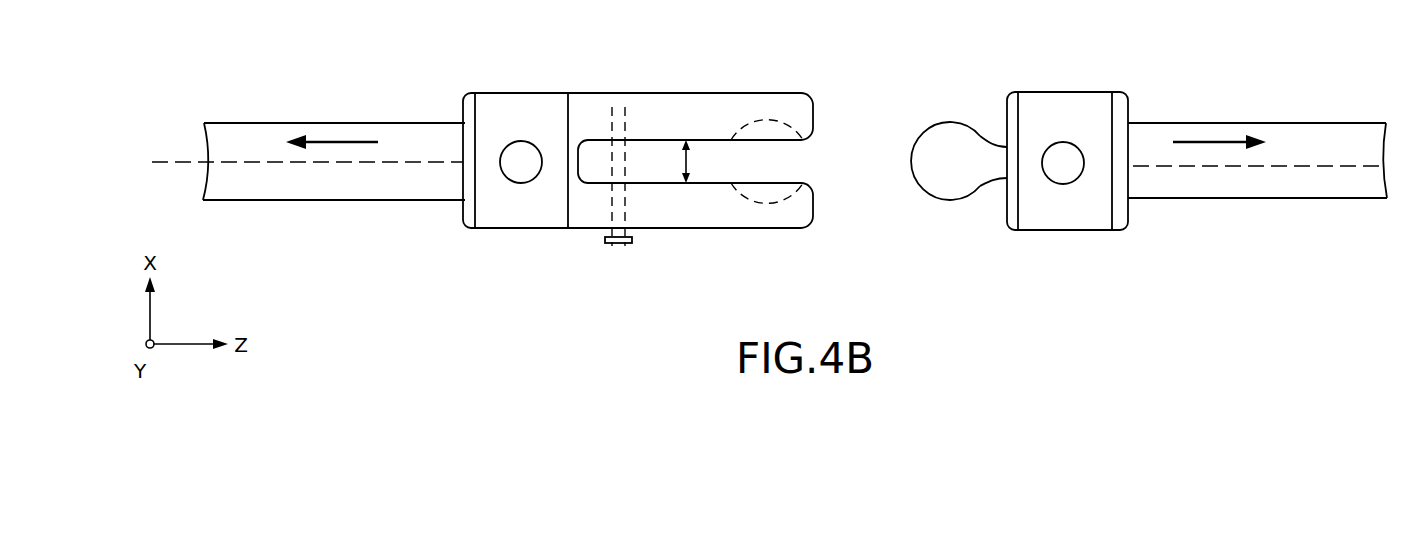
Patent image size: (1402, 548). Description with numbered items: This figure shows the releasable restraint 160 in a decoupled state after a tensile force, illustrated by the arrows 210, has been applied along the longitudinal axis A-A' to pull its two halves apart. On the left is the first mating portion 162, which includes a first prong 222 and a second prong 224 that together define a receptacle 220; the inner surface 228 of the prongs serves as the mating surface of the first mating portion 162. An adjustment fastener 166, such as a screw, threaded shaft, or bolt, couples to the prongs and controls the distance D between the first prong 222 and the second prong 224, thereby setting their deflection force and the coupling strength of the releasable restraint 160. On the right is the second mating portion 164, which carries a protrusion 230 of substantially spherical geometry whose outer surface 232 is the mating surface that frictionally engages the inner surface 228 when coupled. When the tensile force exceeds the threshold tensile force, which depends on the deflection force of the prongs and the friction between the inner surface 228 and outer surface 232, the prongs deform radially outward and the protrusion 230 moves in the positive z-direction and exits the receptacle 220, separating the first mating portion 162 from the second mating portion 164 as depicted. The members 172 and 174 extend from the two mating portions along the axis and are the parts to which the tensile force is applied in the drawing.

The releasable restraint 160 is at (1222, 319).
The first mating portion 162 is at (576, 92).
The second mating portion 164 is at (1018, 230).
The adjustment fastener 166 is at (625, 245).
The first rod 172 is at (245, 183).
The second rod 174 is at (1198, 191).
The arrows 210 is at (336, 140).
The receptacle 220 is at (780, 200).
The first prong 222 is at (690, 105).
The second prong 224 is at (697, 212).
The inner surface 228 is at (783, 130).
The protrusion 230 is at (947, 222).
The outer surface 232 is at (956, 122).